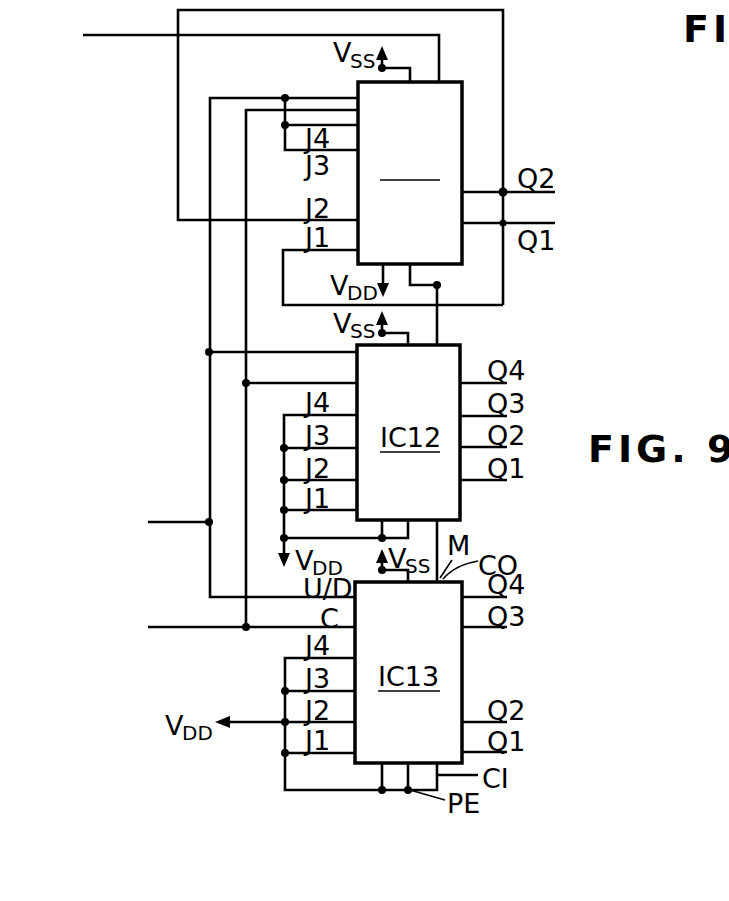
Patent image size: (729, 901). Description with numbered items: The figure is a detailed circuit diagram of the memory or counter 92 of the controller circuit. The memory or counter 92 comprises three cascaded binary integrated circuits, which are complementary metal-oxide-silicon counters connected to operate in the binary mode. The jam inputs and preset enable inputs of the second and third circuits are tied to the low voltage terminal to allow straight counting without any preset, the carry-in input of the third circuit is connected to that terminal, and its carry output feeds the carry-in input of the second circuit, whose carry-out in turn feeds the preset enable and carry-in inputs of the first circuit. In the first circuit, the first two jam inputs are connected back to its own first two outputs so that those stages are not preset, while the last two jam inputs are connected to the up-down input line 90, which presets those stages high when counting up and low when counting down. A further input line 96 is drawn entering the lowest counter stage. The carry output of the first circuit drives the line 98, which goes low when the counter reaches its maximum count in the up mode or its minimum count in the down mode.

The line 98 is at (128, 35).
The memory or counter 92 is at (530, 88).
The up-down input line 90 is at (148, 522).
The clock input line 96 is at (160, 627).